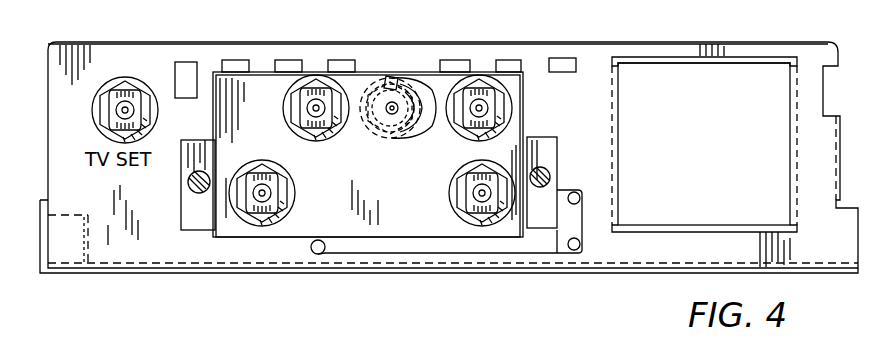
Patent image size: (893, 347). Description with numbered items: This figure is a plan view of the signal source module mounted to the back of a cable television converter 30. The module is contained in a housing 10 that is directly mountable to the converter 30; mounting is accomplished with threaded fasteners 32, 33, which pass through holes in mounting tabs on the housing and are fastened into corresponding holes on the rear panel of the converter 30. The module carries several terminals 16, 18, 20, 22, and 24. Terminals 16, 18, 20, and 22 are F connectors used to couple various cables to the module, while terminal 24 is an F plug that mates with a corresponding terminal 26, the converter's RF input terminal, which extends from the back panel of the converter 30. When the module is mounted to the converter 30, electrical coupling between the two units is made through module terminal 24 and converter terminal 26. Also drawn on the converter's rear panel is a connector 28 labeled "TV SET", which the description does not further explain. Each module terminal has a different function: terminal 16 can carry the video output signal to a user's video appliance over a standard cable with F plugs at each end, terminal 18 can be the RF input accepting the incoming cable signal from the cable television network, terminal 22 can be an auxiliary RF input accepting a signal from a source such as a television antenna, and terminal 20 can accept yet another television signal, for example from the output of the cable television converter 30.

The housing 10 is at (525, 127).
The terminal 16 is at (302, 105).
The terminal 18 is at (477, 86).
The terminal 20 is at (278, 192).
The terminal 22 is at (462, 192).
The terminal 24 is at (392, 140).
The terminal 26 is at (393, 80).
The TV set connector 28 is at (122, 77).
The cable television converter 30 is at (690, 48).
The threaded fastener 32 is at (190, 191).
The threaded fastener 33 is at (548, 169).